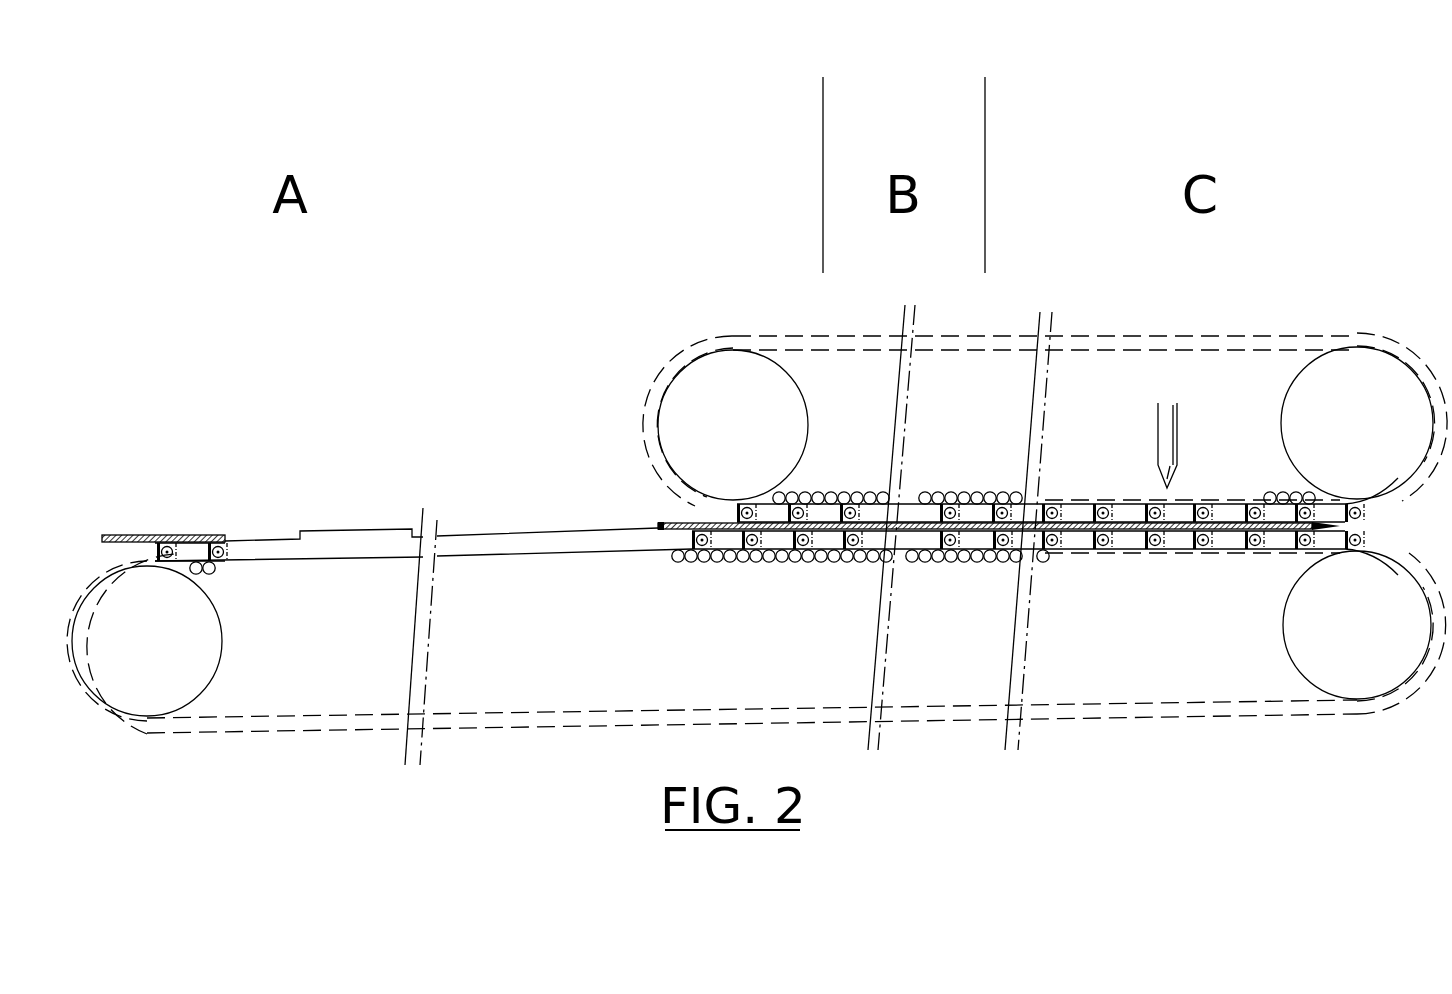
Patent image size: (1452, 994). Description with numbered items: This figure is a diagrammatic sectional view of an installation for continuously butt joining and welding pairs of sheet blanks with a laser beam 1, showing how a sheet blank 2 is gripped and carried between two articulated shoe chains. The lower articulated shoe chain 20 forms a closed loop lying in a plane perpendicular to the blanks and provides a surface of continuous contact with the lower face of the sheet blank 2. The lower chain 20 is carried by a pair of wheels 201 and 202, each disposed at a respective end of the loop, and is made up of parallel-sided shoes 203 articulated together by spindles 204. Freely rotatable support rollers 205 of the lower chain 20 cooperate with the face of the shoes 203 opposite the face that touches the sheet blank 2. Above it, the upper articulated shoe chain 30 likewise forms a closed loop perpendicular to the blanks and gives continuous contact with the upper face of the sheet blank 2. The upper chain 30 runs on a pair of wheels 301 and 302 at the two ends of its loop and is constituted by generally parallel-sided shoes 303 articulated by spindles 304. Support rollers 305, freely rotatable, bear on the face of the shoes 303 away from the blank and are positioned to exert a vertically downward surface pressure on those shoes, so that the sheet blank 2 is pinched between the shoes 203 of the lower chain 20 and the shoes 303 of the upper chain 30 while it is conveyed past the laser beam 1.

The laser beam 1 is at (1158, 433).
The sheet blank 2 is at (166, 535).
The lower articulated shoe chain 20 is at (582, 514).
The upper articulated shoe chain 30 is at (1190, 332).
The wheel 201 is at (216, 682).
The wheel 202 is at (1284, 660).
The shoe 203 is at (773, 562).
The spindle 204 is at (1258, 548).
The support roller 205 is at (228, 570).
The wheel 301 is at (809, 420).
The wheel 302 is at (1282, 400).
The shoe 303 is at (872, 512).
The spindle 304 is at (1205, 510).
The support roller 305 is at (924, 492).